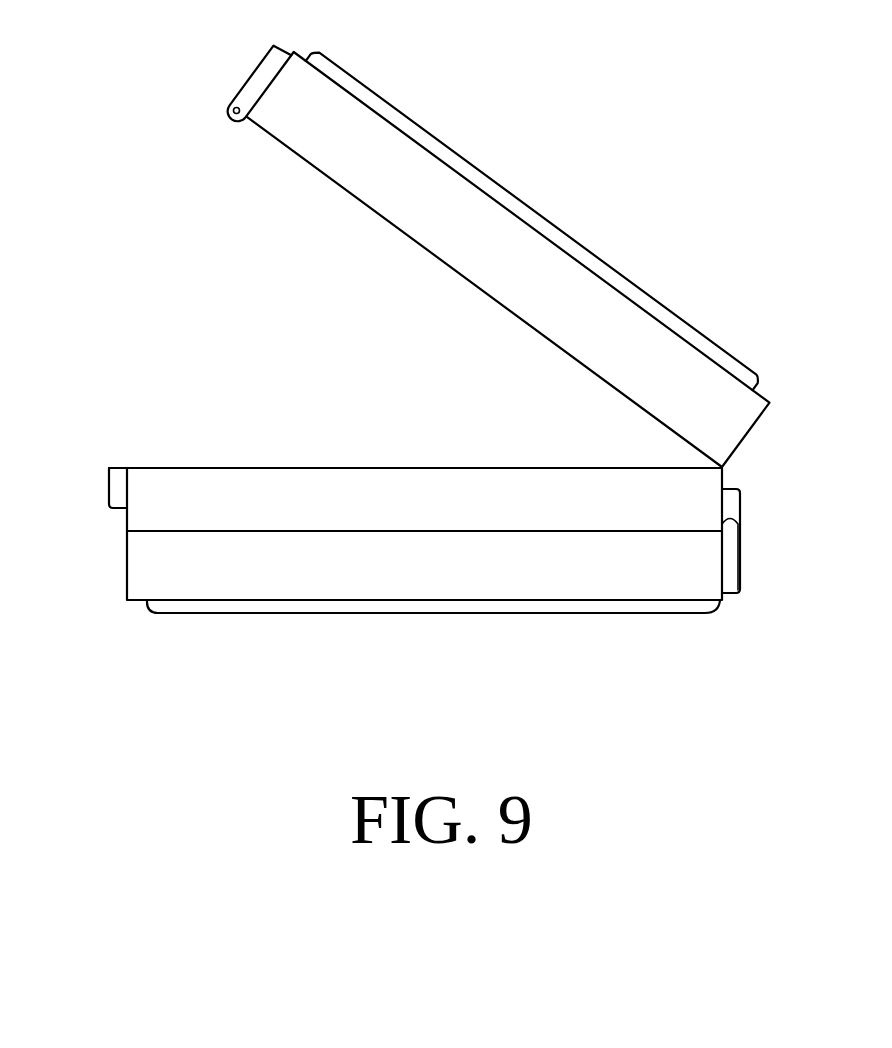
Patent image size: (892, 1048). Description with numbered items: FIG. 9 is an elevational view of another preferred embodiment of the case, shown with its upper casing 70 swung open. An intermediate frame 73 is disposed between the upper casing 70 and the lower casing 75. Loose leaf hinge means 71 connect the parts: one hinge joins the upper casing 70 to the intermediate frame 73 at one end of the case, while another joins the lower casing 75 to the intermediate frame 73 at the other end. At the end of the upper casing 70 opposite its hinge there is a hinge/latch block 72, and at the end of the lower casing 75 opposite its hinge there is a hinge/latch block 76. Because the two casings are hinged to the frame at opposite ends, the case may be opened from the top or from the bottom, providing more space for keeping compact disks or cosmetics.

The upper casing 70 is at (482, 207).
The loose leaf hinge means 71 is at (722, 467).
The hinge/latch block 72 is at (258, 82).
The intermediate frame 73 is at (333, 480).
The lower casing 75 is at (433, 578).
The hinge/latch block 76 is at (732, 565).